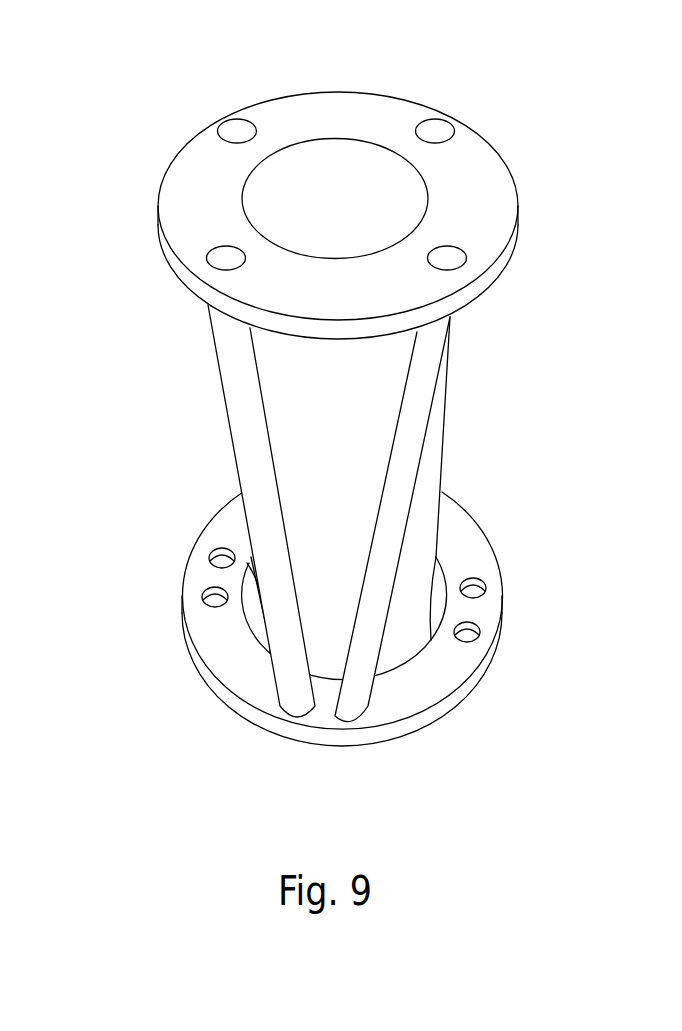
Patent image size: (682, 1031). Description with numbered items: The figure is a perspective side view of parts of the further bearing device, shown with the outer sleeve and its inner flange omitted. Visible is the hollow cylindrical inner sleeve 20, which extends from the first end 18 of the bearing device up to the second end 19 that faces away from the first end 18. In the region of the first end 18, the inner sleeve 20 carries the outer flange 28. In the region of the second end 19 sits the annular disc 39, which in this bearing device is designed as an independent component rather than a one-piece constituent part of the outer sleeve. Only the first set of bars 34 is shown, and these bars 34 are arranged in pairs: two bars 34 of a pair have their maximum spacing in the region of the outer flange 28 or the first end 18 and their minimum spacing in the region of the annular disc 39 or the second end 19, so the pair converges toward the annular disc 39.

The first end 18 is at (147, 165).
The second end 19 is at (468, 708).
The inner sleeve 20 is at (332, 170).
The outer flange 28 is at (475, 187).
The bars 34 is at (400, 487).
The annular disc 39 is at (448, 662).